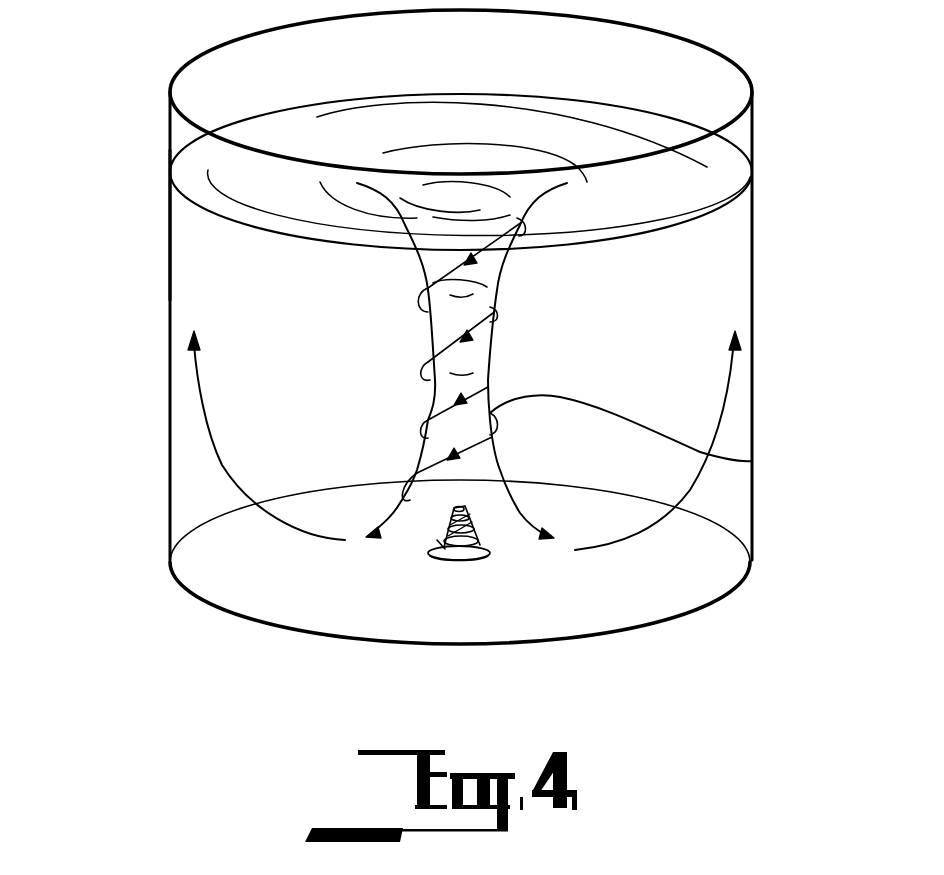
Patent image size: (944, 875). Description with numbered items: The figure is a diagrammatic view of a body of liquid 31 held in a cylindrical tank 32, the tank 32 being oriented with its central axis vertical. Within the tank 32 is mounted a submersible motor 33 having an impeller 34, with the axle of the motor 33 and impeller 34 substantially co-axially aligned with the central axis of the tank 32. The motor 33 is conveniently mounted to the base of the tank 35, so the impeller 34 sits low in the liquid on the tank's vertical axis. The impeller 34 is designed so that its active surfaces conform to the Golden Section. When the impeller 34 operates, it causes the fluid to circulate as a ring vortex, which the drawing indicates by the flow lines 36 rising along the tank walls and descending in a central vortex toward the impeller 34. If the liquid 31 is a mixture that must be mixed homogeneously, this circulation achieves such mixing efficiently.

The body of liquid 31 is at (622, 320).
The cylindrical tank 32 is at (168, 228).
The submersible motor 33 is at (440, 560).
The impeller 34 is at (488, 538).
The base of the tank 35 is at (225, 571).
The flow lines 36 is at (752, 461).